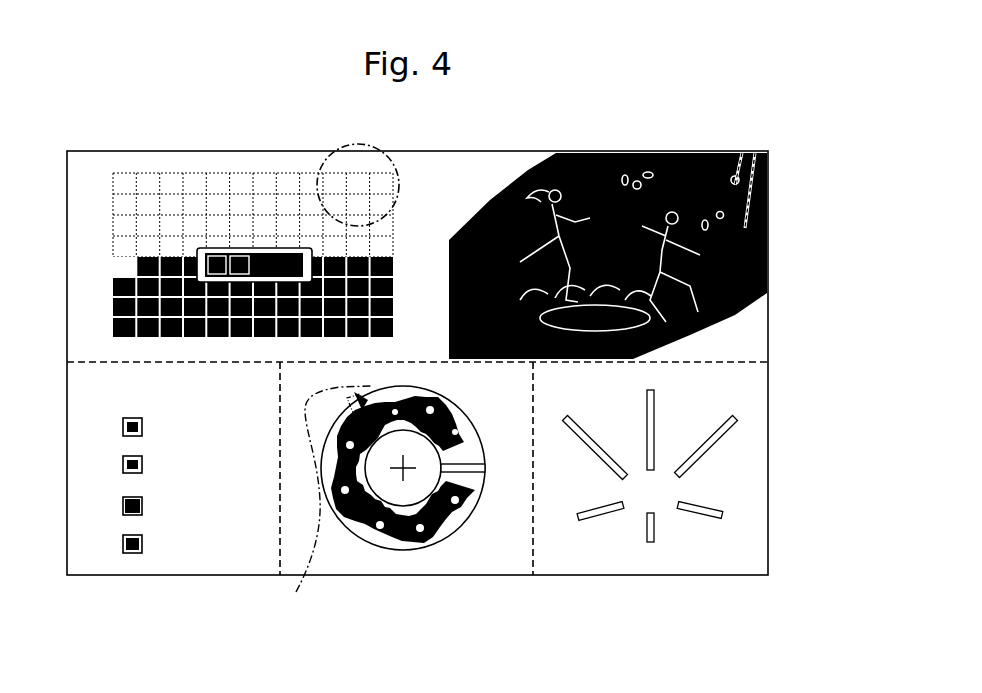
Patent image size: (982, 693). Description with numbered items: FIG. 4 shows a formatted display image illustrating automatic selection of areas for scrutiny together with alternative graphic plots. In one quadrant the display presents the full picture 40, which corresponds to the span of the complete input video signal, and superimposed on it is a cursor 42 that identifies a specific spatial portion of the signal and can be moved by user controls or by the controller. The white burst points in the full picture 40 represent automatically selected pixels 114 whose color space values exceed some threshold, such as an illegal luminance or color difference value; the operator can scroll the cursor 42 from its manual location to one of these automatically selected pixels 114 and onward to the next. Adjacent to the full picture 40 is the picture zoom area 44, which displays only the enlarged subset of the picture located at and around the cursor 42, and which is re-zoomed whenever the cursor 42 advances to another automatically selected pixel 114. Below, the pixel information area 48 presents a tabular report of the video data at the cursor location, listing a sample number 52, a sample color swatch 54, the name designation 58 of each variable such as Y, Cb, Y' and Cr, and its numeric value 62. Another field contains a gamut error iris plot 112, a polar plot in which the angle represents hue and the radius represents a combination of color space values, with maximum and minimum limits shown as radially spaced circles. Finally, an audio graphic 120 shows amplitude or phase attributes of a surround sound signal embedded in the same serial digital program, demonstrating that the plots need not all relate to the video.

The full picture 40 is at (742, 330).
The cursor 42 is at (250, 252).
The picture zoom area 44 is at (143, 193).
The pixel information area 48 is at (126, 511).
The sample number 52 is at (85, 478).
The sample color swatch 54 is at (132, 553).
The name designation of the variable 58 is at (172, 553).
The numeric value 62 is at (218, 522).
The gamut error iris plot 112 is at (423, 527).
The automatically selected pixels 114 is at (360, 188).
The audio graphic 120 is at (721, 513).